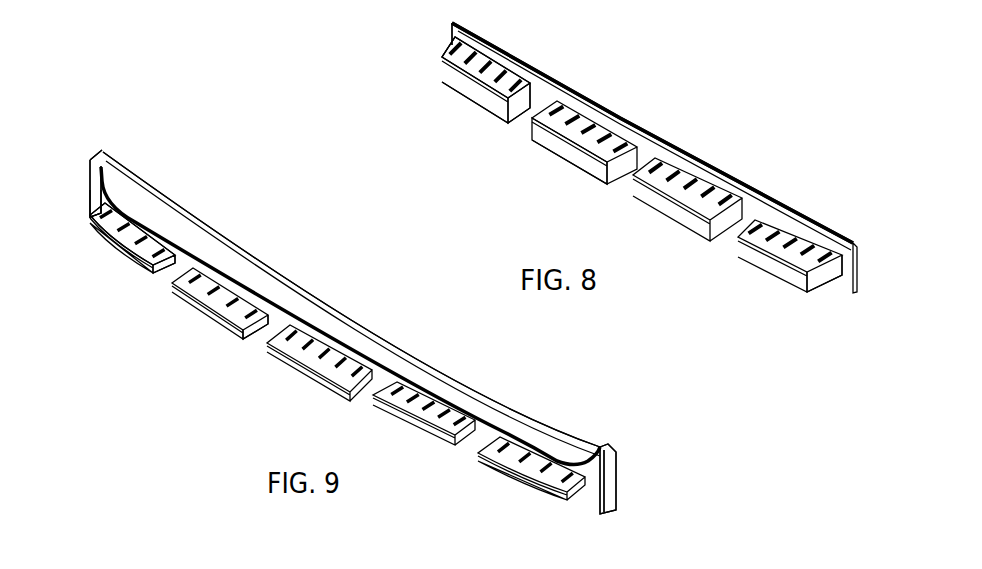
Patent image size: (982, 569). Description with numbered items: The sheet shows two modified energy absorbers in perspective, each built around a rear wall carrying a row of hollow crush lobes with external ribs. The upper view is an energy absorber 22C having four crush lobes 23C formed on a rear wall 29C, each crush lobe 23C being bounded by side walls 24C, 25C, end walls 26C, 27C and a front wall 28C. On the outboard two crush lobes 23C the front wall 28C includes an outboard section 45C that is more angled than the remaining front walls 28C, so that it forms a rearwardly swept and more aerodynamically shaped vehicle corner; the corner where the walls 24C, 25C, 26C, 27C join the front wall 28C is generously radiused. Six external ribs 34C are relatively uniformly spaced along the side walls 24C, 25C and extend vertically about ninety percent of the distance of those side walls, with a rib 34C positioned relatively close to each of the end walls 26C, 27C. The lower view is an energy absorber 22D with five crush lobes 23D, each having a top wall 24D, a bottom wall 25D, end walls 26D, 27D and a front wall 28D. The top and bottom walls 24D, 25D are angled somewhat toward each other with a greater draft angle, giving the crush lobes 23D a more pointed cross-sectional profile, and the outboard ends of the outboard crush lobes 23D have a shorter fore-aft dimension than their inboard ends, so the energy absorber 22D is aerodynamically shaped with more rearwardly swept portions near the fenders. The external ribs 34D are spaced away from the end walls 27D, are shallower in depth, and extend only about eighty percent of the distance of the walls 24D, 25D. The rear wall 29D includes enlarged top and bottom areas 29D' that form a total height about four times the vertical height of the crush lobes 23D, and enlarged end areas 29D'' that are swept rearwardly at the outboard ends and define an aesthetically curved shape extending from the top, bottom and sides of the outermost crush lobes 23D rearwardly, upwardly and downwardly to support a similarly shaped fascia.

In FIG. 8, the energy absorber 22C is at (784, 150).
In FIG. 8, the crush lobe 23C is at (445, 93).
In FIG. 8, the side wall 24C is at (466, 51).
In FIG. 8, the side wall 25C is at (512, 113).
In FIG. 8, the end wall 26C is at (516, 126).
In FIG. 8, the end wall 27C is at (448, 44).
In FIG. 8, the front wall 28C is at (550, 142).
In FIG. 8, the rear wall 29C is at (537, 72).
In FIG. 8, the external rib 34C is at (597, 133).
In FIG. 8, the outboard section 45C is at (817, 282).
In FIG. 9, the energy absorber 22D is at (330, 282).
In FIG. 9, the crush lobe 23D is at (110, 247).
In FIG. 9, the top wall 24D is at (148, 237).
In FIG. 9, the bottom wall 25D is at (242, 327).
In FIG. 9, the end wall 26D is at (165, 268).
In FIG. 9, the end wall 27D is at (100, 203).
In FIG. 9, the front wall 28D is at (92, 229).
In FIG. 9, the rear wall 29D is at (363, 332).
In FIG. 9, the enlarged top and bottom areas 29D' is at (350, 316).
In FIG. 9, the enlarged end areas 29D'' is at (619, 498).
In FIG. 9, the external rib 34D is at (310, 345).